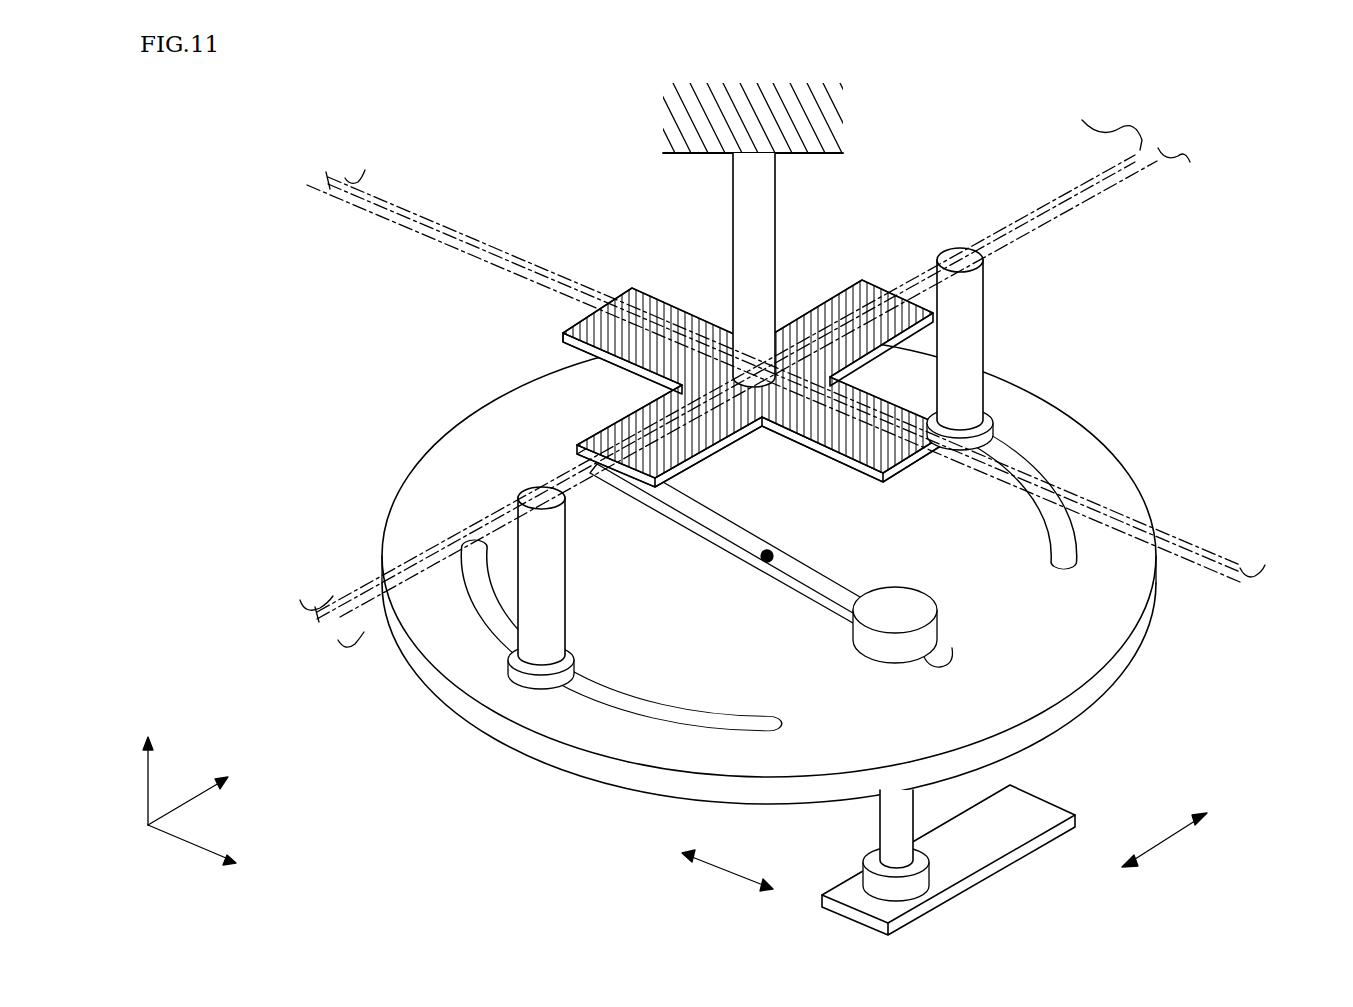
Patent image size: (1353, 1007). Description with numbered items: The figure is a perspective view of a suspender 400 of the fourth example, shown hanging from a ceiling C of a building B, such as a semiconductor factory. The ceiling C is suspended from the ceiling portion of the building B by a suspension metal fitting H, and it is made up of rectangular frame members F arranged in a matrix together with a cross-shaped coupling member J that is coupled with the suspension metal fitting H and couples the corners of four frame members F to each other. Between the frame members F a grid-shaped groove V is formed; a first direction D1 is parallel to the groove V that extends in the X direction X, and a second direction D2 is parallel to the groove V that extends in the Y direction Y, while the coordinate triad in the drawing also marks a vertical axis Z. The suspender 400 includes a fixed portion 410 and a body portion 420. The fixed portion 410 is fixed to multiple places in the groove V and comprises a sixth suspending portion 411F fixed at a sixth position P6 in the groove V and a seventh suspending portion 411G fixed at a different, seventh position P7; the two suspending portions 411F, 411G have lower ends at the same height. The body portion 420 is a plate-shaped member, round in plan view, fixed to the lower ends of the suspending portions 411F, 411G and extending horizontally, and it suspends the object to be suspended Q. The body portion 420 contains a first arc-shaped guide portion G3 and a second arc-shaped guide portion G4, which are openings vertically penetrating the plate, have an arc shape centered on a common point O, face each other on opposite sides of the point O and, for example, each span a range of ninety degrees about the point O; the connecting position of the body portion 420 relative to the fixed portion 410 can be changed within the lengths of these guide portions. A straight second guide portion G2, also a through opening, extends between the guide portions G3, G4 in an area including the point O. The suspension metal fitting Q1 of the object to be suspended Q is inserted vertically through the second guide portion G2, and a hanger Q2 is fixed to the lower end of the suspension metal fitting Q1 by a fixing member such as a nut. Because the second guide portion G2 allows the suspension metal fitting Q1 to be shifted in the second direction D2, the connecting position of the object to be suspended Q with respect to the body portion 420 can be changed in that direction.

The suspender 400 is at (764, 506).
The fixed portion 410 is at (702, 421).
The body portion 420 is at (1153, 487).
The sixth suspending portion 411F is at (530, 548).
The seventh suspending portion 411G is at (958, 268).
The building B is at (826, 141).
The suspension metal fitting H is at (765, 182).
The coupling member J is at (645, 320).
The sixth position P6 is at (502, 488).
The seventh position P7 is at (998, 338).
The second guide portion G2 is at (955, 655).
The first arc-shaped guide portion G3 is at (618, 710).
The second arc-shaped guide portion G4 is at (1020, 470).
The common point O is at (767, 562).
The object to be suspended Q is at (933, 856).
The suspension metal fitting Q1 is at (887, 812).
The hanger Q2 is at (1035, 809).
The ceiling C is at (1234, 630).
The grid-shaped groove V is at (1090, 165).
The frame member F is at (772, 373).
The first direction D1 is at (1164, 846).
The second direction D2 is at (727, 877).
The X direction X is at (196, 793).
The Y direction Y is at (201, 850).
The Z axis Z is at (146, 765).